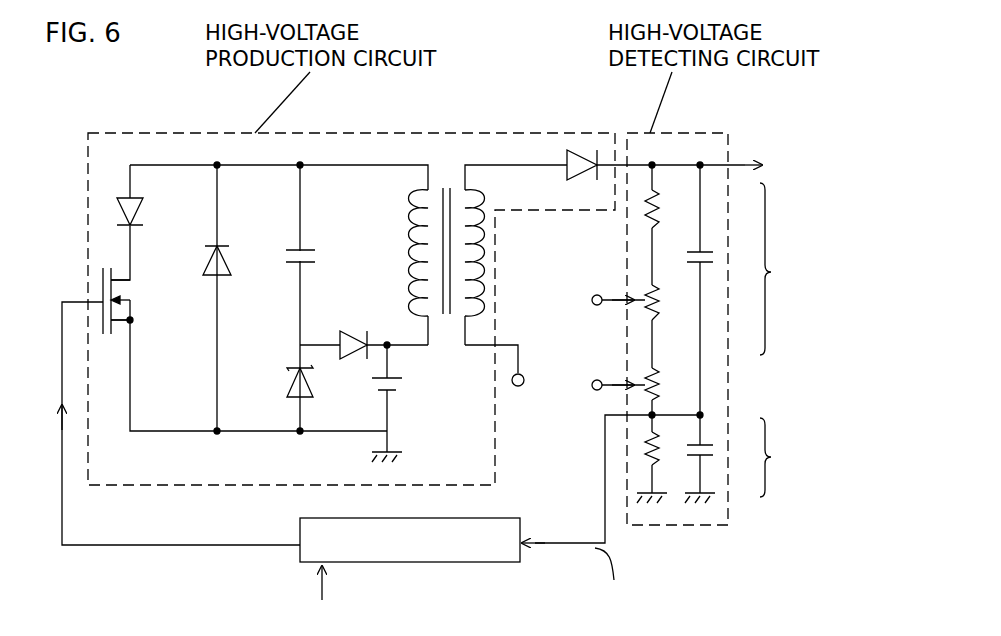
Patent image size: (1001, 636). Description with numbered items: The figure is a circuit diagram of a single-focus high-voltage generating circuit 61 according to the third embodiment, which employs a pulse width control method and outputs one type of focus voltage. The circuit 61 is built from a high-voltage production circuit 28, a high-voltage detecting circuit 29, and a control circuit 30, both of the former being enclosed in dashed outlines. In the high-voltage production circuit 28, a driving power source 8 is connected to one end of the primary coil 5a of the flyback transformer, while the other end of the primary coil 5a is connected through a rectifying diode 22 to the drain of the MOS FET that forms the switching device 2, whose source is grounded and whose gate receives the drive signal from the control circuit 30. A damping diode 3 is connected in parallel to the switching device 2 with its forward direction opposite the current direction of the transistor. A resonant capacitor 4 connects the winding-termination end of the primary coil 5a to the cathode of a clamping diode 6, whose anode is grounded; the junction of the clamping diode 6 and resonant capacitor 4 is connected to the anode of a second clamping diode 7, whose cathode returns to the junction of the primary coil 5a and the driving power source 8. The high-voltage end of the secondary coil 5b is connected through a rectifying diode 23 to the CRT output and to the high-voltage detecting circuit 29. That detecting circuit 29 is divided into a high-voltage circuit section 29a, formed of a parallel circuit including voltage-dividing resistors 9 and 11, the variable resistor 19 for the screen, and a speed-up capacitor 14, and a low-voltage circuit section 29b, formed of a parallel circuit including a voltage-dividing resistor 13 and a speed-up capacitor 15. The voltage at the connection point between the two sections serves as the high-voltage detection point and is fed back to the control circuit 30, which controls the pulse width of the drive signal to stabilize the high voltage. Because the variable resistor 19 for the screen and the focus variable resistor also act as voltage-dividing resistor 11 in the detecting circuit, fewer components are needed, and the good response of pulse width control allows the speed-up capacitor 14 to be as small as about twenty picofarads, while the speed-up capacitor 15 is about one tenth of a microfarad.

The high-voltage generating circuit 61 is at (146, 106).
The high-voltage production circuit 28 is at (330, 133).
The high-voltage detecting circuit 29 is at (680, 133).
The rectifying diode 22 is at (142, 218).
The switching device 2 is at (118, 326).
The damping diode 3 is at (213, 272).
The resonant capacitor 4 is at (312, 248).
The clamping diode 6 is at (290, 370).
The clamping diode 7 is at (357, 330).
The driving power source 8 is at (395, 372).
The primary coil 5a is at (412, 225).
The secondary coil 5b is at (484, 222).
The rectifying diode 23 is at (582, 150).
The voltage-dividing resistor 9 is at (659, 222).
The voltage-dividing resistor 11 is at (660, 314).
The variable resistor for a screen 19 is at (657, 374).
The voltage-dividing resistor 13 is at (657, 463).
The speed-up capacitor 14 is at (705, 265).
The speed-up capacitor 15 is at (708, 457).
The control circuit 30 is at (400, 562).
The high-voltage circuit section 29a is at (793, 269).
The low-voltage circuit section 29b is at (794, 457).